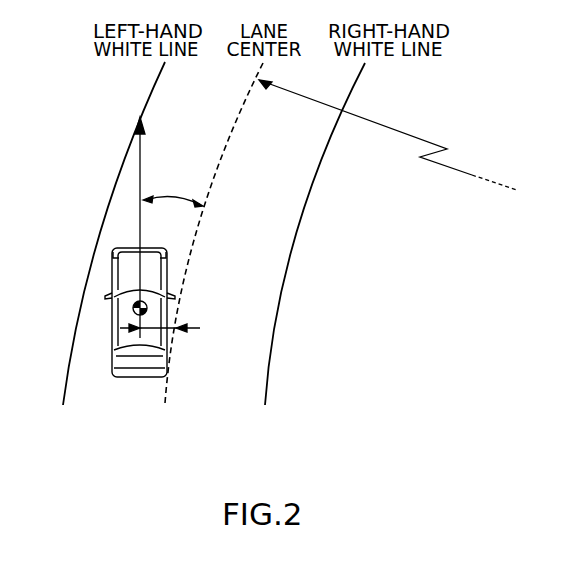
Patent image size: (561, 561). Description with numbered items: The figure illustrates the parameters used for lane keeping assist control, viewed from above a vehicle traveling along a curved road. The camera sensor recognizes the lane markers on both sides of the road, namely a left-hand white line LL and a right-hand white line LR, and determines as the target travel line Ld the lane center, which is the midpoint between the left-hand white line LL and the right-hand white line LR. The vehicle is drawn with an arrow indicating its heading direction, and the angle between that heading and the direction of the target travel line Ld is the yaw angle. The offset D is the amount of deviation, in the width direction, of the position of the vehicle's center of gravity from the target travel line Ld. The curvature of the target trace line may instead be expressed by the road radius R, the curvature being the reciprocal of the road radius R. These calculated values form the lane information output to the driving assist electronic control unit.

The left-hand white line LL is at (73, 315).
The right-hand white line LR is at (278, 313).
The target travel line Ld is at (220, 173).
The road radius R is at (388, 135).
The offset D is at (171, 329).